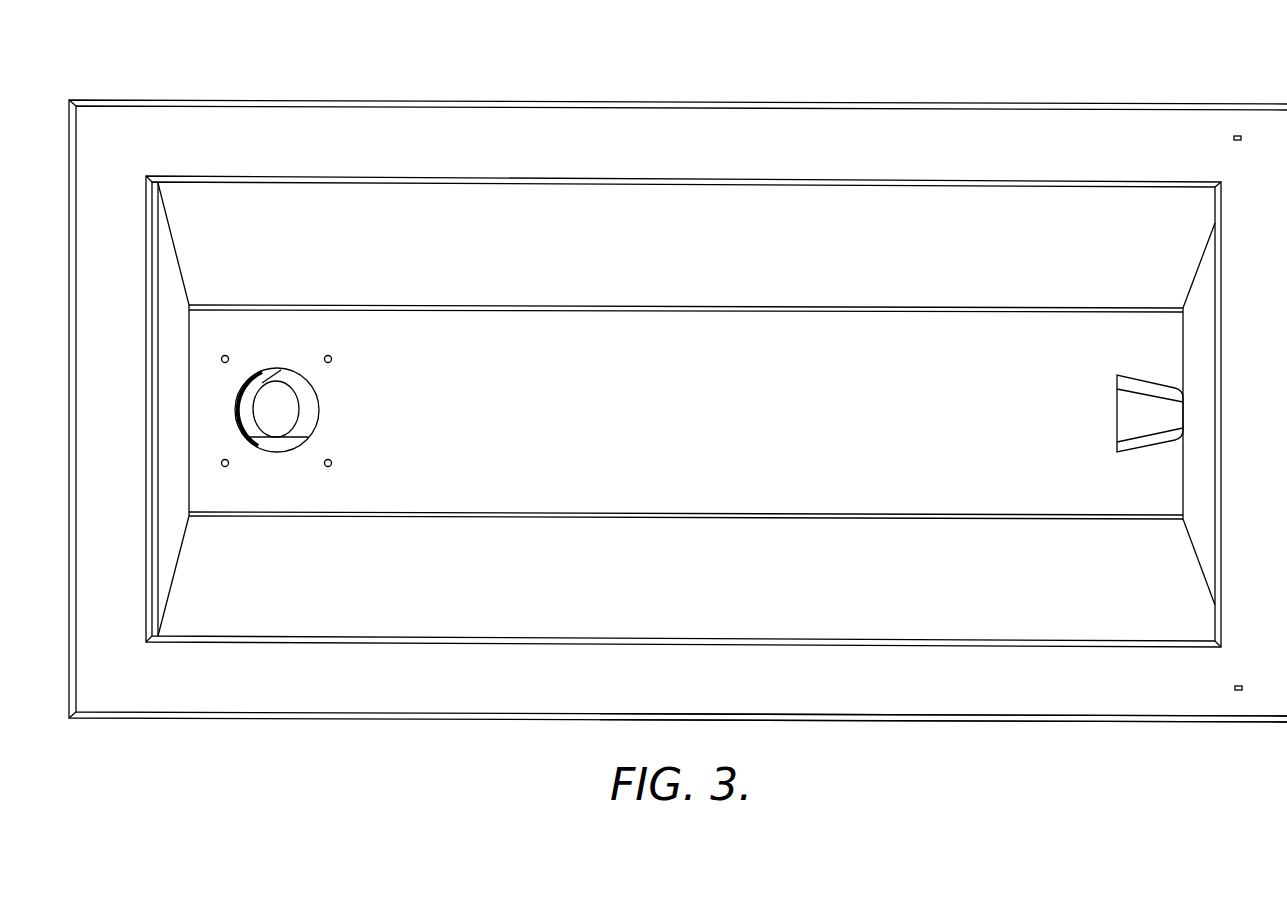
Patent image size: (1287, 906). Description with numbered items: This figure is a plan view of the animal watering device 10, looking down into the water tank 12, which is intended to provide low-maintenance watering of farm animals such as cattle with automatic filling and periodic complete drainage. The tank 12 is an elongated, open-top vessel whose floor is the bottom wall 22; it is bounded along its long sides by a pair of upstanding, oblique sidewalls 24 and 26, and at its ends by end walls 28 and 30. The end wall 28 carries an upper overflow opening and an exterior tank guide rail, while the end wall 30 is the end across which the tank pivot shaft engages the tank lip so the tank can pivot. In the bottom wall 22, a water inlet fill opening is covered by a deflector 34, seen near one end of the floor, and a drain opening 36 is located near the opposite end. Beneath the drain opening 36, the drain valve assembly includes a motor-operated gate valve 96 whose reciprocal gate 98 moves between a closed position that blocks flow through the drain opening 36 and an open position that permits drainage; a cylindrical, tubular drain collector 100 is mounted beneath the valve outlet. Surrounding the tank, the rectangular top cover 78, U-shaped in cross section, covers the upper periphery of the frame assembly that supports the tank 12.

The animal watering device 10 is at (378, 78).
The water tank 12 is at (786, 208).
The bottom wall 22 is at (535, 416).
The sidewall 24 is at (870, 278).
The sidewall 26 is at (830, 540).
The end wall 28 is at (178, 523).
The end wall 30 is at (1203, 523).
The deflector 34 is at (1128, 412).
The drain opening 36 is at (318, 427).
The top cover 78 is at (958, 680).
The gate valve 96 is at (268, 383).
The gate 98 is at (283, 440).
The drain collector 100 is at (309, 403).